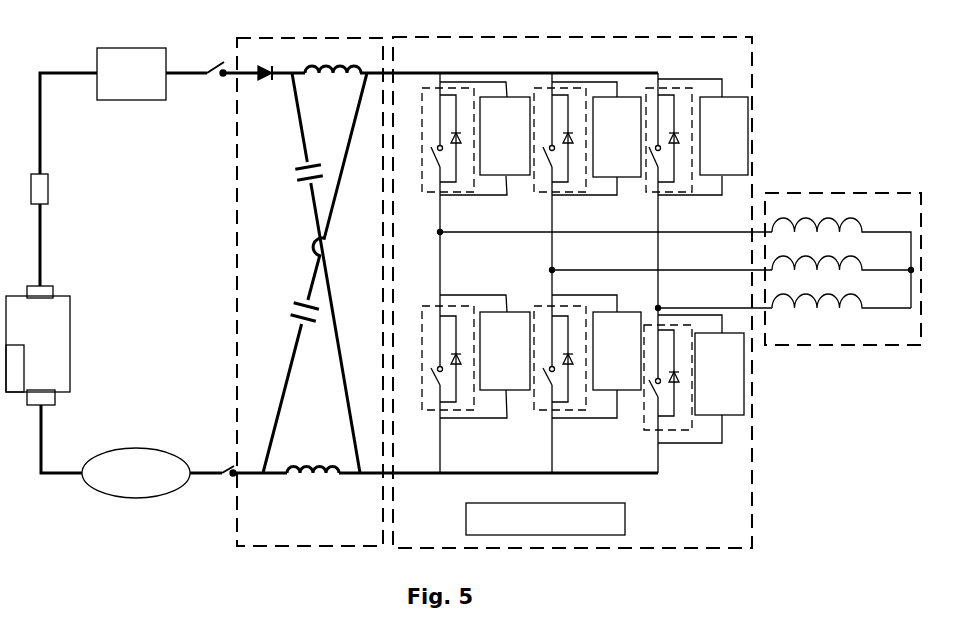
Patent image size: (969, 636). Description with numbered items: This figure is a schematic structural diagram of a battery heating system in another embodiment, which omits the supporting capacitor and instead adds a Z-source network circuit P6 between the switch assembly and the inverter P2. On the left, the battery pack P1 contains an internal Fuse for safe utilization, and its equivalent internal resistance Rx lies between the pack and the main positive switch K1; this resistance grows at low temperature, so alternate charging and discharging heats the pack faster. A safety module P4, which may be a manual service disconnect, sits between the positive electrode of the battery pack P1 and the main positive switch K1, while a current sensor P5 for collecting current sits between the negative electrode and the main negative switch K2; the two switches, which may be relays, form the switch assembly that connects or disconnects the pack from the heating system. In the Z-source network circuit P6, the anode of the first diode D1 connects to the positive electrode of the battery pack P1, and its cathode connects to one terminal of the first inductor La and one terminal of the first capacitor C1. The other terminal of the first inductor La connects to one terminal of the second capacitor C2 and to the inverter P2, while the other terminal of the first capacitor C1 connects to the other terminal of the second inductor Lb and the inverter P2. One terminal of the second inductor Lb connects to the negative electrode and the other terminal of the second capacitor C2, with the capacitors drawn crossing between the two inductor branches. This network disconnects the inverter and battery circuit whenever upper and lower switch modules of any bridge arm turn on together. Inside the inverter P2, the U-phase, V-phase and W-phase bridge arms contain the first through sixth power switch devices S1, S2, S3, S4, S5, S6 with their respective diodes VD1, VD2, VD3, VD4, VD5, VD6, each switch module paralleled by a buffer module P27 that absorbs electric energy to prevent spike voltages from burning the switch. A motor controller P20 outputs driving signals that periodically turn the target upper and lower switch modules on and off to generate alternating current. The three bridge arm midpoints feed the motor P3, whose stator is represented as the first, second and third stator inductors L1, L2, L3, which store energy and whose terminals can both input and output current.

The battery pack P1 is at (38, 346).
The fuse Fuse is at (15, 368).
The equivalent internal resistance Rx is at (49, 189).
The safety module P4 is at (131, 74).
The current sensor P5 is at (136, 473).
The main positive switch K1 is at (212, 59).
The main negative switch K2 is at (251, 459).
The Z-source network circuit P6 is at (283, 37).
The first diode D1 is at (281, 63).
The first inductor La is at (333, 60).
The second inductor Lb is at (313, 482).
The first capacitor C1 is at (317, 273).
The second capacitor C2 is at (315, 273).
The inverter P2 is at (505, 37).
The first power switch device S1 is at (436, 86).
The second power switch device S2 is at (432, 411).
The third power switch device S3 is at (548, 86).
The fourth power switch device S4 is at (547, 411).
The fifth power switch device S5 is at (654, 86).
The sixth power switch device S6 is at (655, 432).
The diode of the first power switch device VD1 is at (457, 138).
The diode of the second power switch device VD2 is at (457, 359).
The diode of the third power switch device VD3 is at (569, 138).
The diode of the fourth power switch device VD4 is at (569, 359).
The diode of the fifth power switch device VD5 is at (675, 138).
The diode of the sixth power switch device VD6 is at (675, 373).
The buffer module P27 is at (614, 256).
The motor controller P20 is at (545, 519).
The motor P3 is at (845, 193).
The first stator inductor L1 is at (841, 256).
The second stator inductor L2 is at (843, 258).
The third stator inductor L3 is at (841, 294).